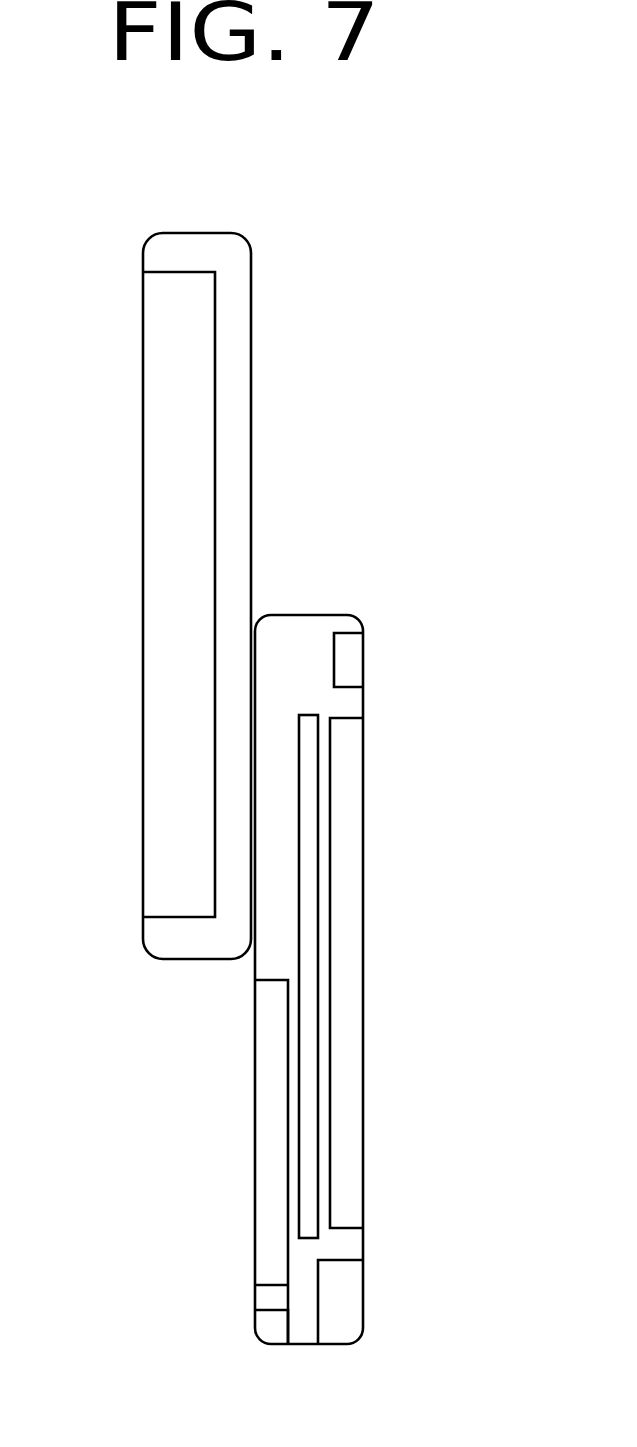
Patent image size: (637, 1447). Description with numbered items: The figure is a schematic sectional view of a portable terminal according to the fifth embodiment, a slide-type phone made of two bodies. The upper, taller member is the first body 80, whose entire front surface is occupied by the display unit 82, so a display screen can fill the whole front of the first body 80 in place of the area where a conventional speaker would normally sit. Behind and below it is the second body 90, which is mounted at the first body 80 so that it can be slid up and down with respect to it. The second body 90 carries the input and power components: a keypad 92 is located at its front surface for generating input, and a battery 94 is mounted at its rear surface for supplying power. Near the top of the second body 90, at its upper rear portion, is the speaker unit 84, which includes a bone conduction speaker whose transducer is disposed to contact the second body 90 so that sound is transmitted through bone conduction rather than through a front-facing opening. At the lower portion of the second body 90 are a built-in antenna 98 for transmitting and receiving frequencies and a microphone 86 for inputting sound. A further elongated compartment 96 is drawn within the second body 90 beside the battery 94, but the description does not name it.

The first body 80 is at (282, 350).
The display unit 82 is at (157, 426).
The second body 90 is at (397, 900).
The speaker unit 84 is at (352, 657).
The battery 96 is at (312, 1004).
The battery 94 is at (355, 1078).
The built-in antenna 98 is at (357, 1279).
The keypad 92 is at (262, 1098).
The microphone 86 is at (262, 1318).